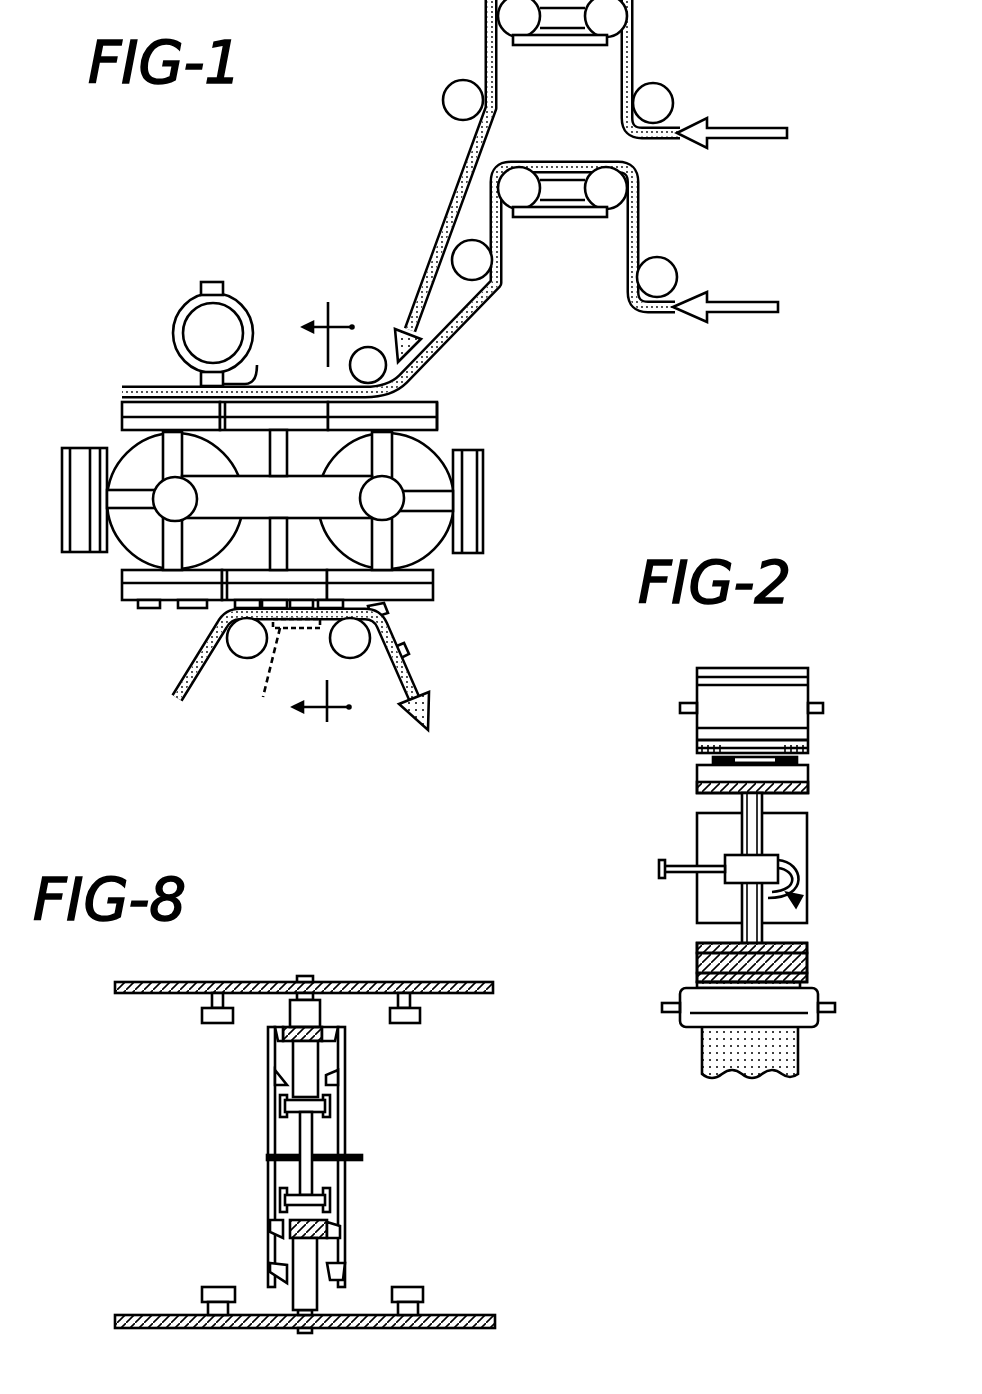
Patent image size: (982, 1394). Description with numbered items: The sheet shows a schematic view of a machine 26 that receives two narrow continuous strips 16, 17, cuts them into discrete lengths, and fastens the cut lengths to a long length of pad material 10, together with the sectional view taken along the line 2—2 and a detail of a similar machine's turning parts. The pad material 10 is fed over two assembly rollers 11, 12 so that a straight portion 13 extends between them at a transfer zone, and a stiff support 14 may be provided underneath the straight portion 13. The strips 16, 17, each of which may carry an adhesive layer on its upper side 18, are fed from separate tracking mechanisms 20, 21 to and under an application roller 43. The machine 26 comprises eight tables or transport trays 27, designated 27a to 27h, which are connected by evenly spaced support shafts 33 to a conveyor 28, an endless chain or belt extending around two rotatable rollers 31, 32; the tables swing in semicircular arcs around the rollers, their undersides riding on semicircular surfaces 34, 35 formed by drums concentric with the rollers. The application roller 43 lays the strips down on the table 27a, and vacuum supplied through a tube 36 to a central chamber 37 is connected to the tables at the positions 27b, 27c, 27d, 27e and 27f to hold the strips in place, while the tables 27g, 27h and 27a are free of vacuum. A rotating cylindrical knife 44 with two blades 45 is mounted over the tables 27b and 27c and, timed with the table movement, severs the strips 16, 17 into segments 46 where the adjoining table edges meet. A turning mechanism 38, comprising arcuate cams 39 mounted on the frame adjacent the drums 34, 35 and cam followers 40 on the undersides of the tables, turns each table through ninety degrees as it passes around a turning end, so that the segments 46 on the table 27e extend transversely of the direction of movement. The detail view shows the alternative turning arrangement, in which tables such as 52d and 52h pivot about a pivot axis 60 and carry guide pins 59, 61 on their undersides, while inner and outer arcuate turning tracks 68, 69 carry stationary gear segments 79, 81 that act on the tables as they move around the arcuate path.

In FIG. 1, the line 2— 2 is at (323, 524).
In FIG. 1, the pad material 10 is at (162, 692).
In FIG. 2, the pad material 10 is at (813, 985).
In FIG. 1, the assembly roller 11 is at (243, 645).
In FIG. 2, the assembly roller 11 is at (680, 1023).
In FIG. 1, the assembly roller 12 is at (350, 645).
In FIG. 1, the straight portion 13 is at (293, 629).
In FIG. 1, the stiff support 14 is at (266, 674).
In FIG. 1, the continuous strip 16 is at (462, 170).
In FIG. 2, the continuous strip 16 is at (795, 760).
In FIG. 1, the continuous strip 17 is at (472, 310).
In FIG. 2, the continuous strip 17 is at (713, 760).
In FIG. 1, the upper side 18 is at (300, 402).
In FIG. 1, the tracking mechanism 20 is at (668, 36).
In FIG. 1, the tracking mechanism 21 is at (675, 231).
In FIG. 1, the machine 26 is at (502, 433).
In FIG. 1, the tables 27 is at (299, 465).
In FIG. 1, the table 27a is at (440, 403).
In FIG. 1, the table 27b is at (290, 400).
In FIG. 2, the table 27b is at (808, 780).
In FIG. 1, the table 27c is at (122, 400).
In FIG. 1, the table 27d is at (93, 447).
In FIG. 2, the table 27d is at (710, 832).
In FIG. 1, the table 27e is at (115, 600).
In FIG. 1, the table 27f is at (225, 607).
In FIG. 2, the table 27f is at (797, 965).
In FIG. 1, the table 27g is at (432, 603).
In FIG. 1, the table 27h is at (483, 496).
In FIG. 1, the conveyor 28 is at (305, 478).
In FIG. 1, the rotatable roller 31 is at (196, 496).
In FIG. 1, the rotatable roller 32 is at (360, 496).
In FIG. 1, the support shaft 33 is at (178, 460).
In FIG. 2, the support shaft 33 is at (752, 803).
In FIG. 1, the semicircular surface 34 is at (125, 548).
In FIG. 1, the semicircular surface 35 is at (432, 563).
In FIG. 2, the tube 36 is at (675, 876).
In FIG. 2, the chamber 37 is at (778, 857).
In FIG. 2, the turning mechanism 38 is at (800, 903).
In FIG. 2, the arcuate cam 39 is at (807, 880).
In FIG. 2, the cam follower 40 is at (788, 866).
In FIG. 1, the application roller 43 is at (368, 350).
In FIG. 1, the rotating cylindrical knife 44 is at (165, 320).
In FIG. 2, the rotating cylindrical knife 44 is at (826, 686).
In FIG. 1, the blade 45 is at (200, 283).
In FIG. 2, the blade 45 is at (768, 668).
In FIG. 1, the segment 46 is at (60, 500).
In FIG. 2, the segment 46 is at (698, 977).
In FIG. 8, the table 52d is at (165, 1315).
In FIG. 8, the table 52h is at (178, 955).
In FIG. 8, the guide pin 59 is at (203, 1017).
In FIG. 8, the pivot axis 60 is at (304, 976).
In FIG. 8, the guide pin 61 is at (420, 1018).
In FIG. 8, the inner arcuate turning track 68 is at (268, 1123).
In FIG. 8, the outer arcuate turning track 69 is at (268, 1033).
In FIG. 8, the stationary gear segment 79 is at (340, 1028).
In FIG. 8, the stationary gear segment 81 is at (340, 1080).